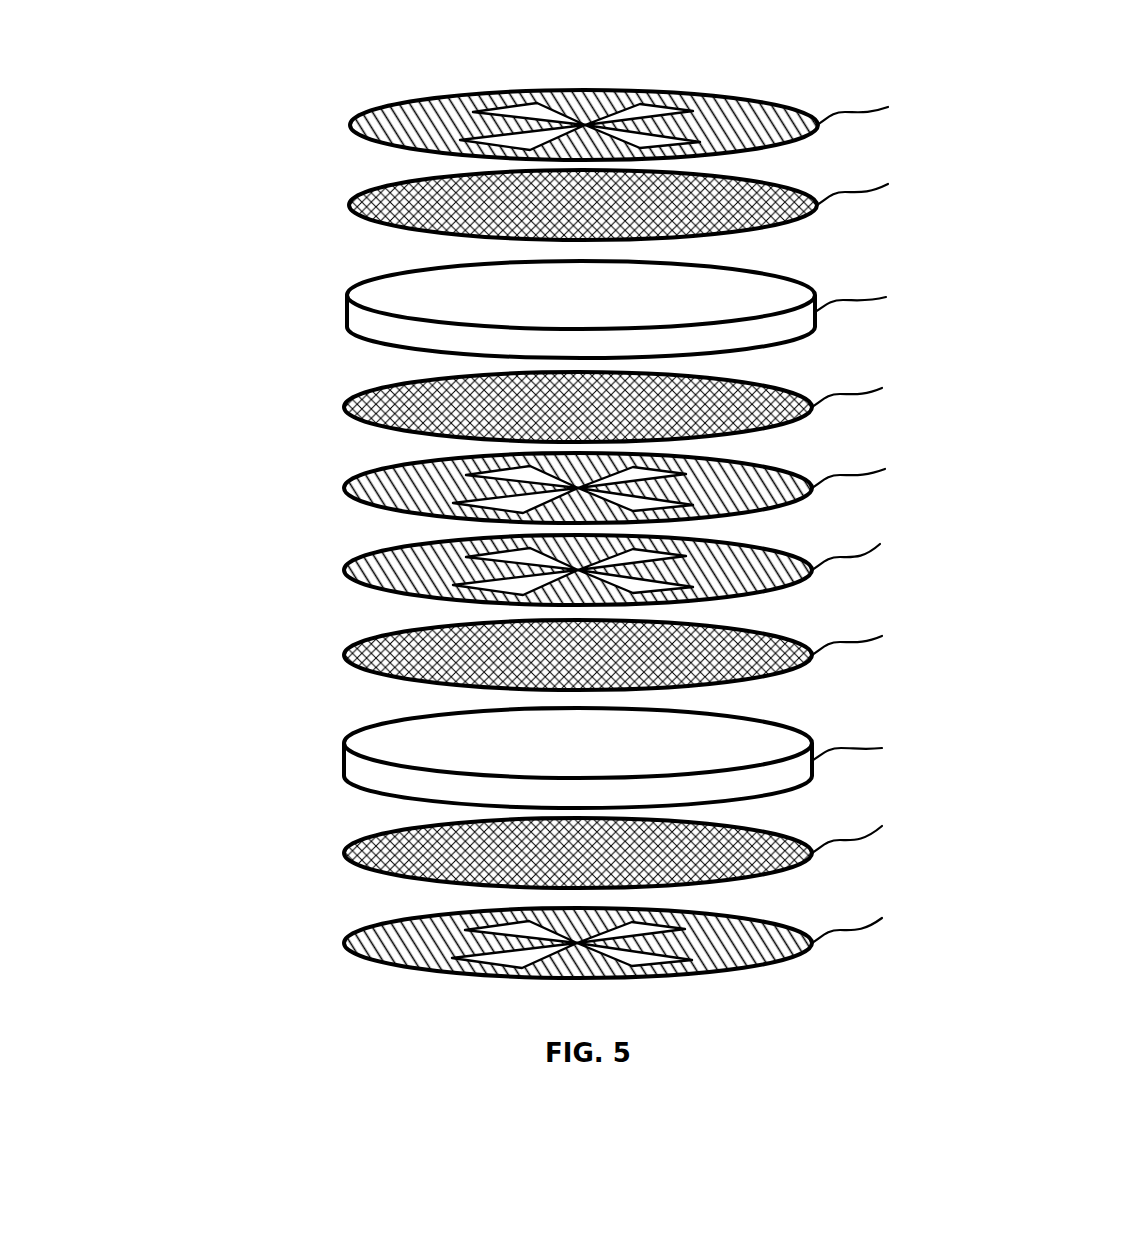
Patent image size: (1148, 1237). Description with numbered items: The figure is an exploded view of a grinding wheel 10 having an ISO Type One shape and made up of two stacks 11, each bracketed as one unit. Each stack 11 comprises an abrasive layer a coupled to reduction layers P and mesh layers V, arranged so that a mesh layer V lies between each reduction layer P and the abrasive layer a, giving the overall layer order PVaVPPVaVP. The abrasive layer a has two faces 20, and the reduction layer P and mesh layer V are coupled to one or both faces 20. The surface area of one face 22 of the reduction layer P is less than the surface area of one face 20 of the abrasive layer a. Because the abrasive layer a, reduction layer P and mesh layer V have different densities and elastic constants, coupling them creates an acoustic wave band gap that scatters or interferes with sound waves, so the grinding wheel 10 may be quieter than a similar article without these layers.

The grinding wheel 10 is at (808, 66).
The stack 11 is at (189, 500).
The face of abrasive layer 20 is at (403, 304).
The face of reduction layer 22 is at (389, 140).